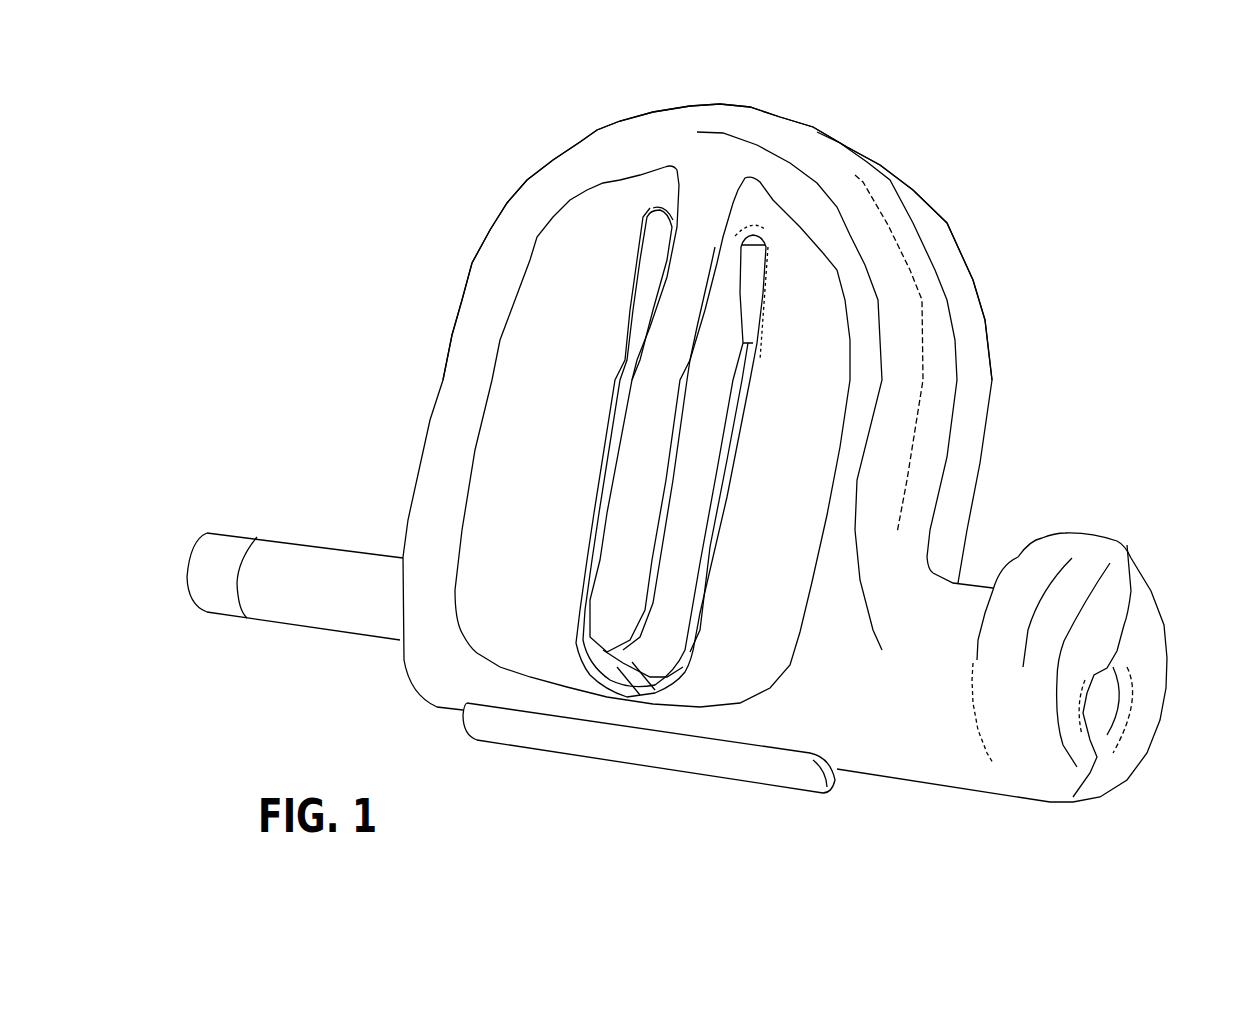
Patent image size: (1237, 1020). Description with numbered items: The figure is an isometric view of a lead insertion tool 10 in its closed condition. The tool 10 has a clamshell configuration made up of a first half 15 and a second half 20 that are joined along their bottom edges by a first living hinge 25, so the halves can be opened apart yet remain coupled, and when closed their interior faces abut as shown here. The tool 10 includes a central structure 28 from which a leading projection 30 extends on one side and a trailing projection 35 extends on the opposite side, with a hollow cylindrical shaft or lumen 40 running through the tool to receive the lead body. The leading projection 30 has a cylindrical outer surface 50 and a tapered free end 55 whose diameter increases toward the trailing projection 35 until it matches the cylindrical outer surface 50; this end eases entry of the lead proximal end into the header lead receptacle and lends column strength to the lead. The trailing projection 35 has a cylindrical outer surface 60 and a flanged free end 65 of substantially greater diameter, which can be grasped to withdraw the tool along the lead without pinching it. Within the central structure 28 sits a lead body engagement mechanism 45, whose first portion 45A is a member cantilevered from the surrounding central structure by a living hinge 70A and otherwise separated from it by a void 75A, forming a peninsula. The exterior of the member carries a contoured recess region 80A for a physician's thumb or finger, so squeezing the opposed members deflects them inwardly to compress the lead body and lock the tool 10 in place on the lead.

The lead insertion tool 10 is at (236, 126).
The first half 15 is at (923, 293).
The second half 20 is at (980, 387).
The first living hinge 25 is at (633, 753).
The central structure 28 is at (778, 91).
The leading projection 30 is at (253, 503).
The trailing projection 35 is at (1069, 492).
The hollow cylindrical shaft or lumen 40 is at (1106, 705).
The lead body engagement mechanism 45 is at (619, 444).
The lead body engagement mechanism first portion 45A is at (650, 383).
The cylindrical outer surface 50 is at (313, 537).
The tapered free end 55 is at (217, 593).
The cylindrical outer surface 60 is at (953, 773).
The flanged free end 65 is at (1097, 545).
The living hinge 70A is at (690, 233).
The void 75A is at (628, 660).
The recess region 80A is at (633, 483).